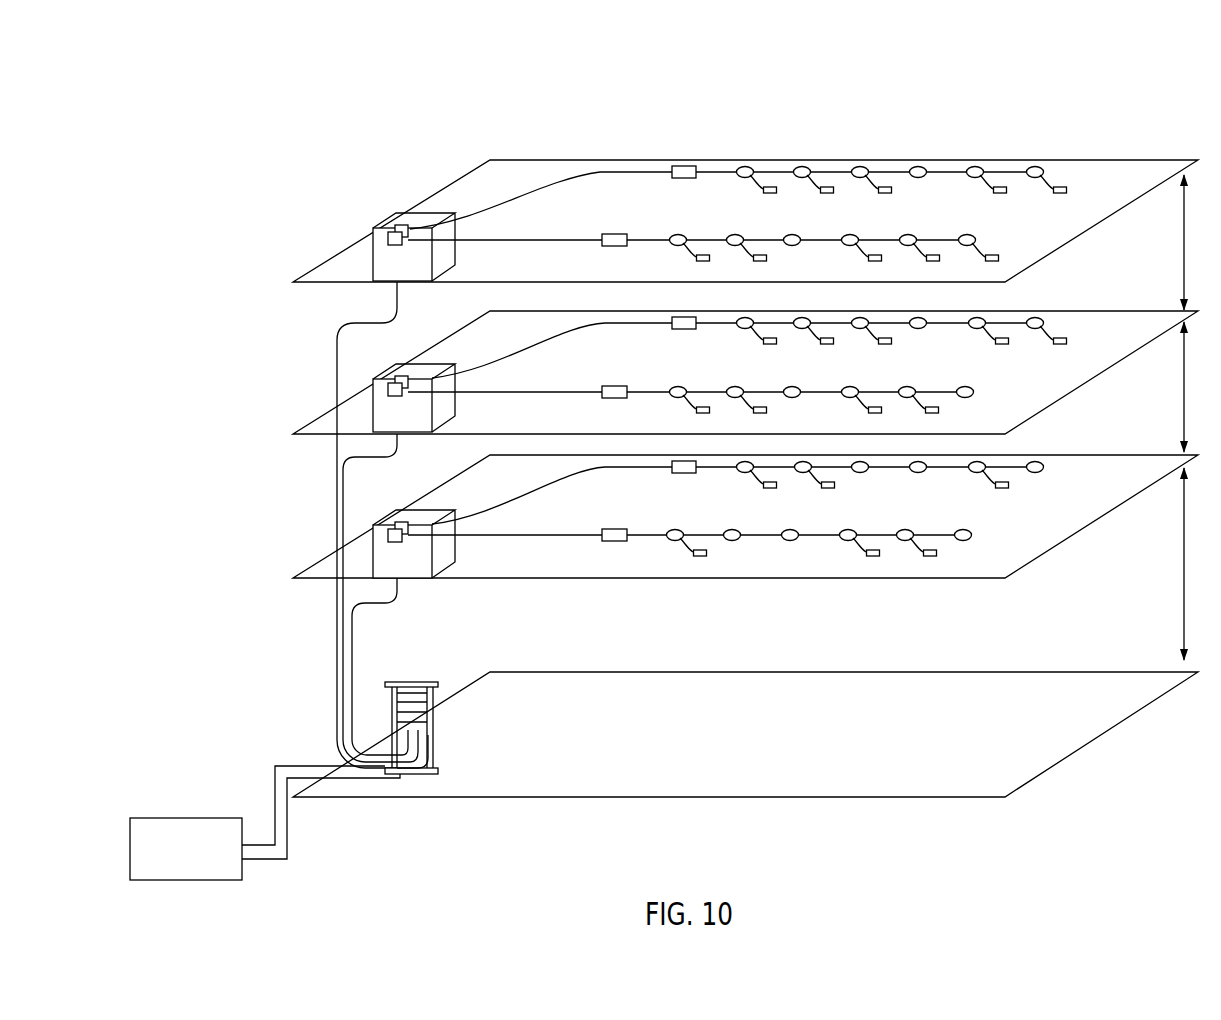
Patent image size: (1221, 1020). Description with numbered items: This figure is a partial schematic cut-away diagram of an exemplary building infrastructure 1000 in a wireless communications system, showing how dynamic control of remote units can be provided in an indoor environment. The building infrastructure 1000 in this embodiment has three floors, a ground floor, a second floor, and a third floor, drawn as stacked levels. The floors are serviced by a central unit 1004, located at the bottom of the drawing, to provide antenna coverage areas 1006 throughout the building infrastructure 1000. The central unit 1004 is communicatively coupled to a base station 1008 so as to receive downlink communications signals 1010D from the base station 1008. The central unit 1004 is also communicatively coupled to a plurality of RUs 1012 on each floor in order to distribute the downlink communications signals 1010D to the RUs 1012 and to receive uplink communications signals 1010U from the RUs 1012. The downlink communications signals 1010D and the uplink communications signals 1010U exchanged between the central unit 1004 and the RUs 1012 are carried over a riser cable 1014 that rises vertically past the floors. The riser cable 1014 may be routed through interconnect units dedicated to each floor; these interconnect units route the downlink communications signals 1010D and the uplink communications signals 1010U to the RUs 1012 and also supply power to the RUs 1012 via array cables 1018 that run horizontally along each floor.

The building infrastructure 1000 is at (813, 51).
The central unit 1004 is at (446, 733).
The antenna coverage areas 1006 is at (1184, 417).
The base station 1008 is at (212, 865).
The downlink communications signals 1010D is at (562, 178).
The uplink communications signals 1010U is at (275, 756).
The remote units (RUs) 1012 is at (1000, 187).
The riser cable 1014 is at (333, 672).
The array cables 1018 is at (607, 172).